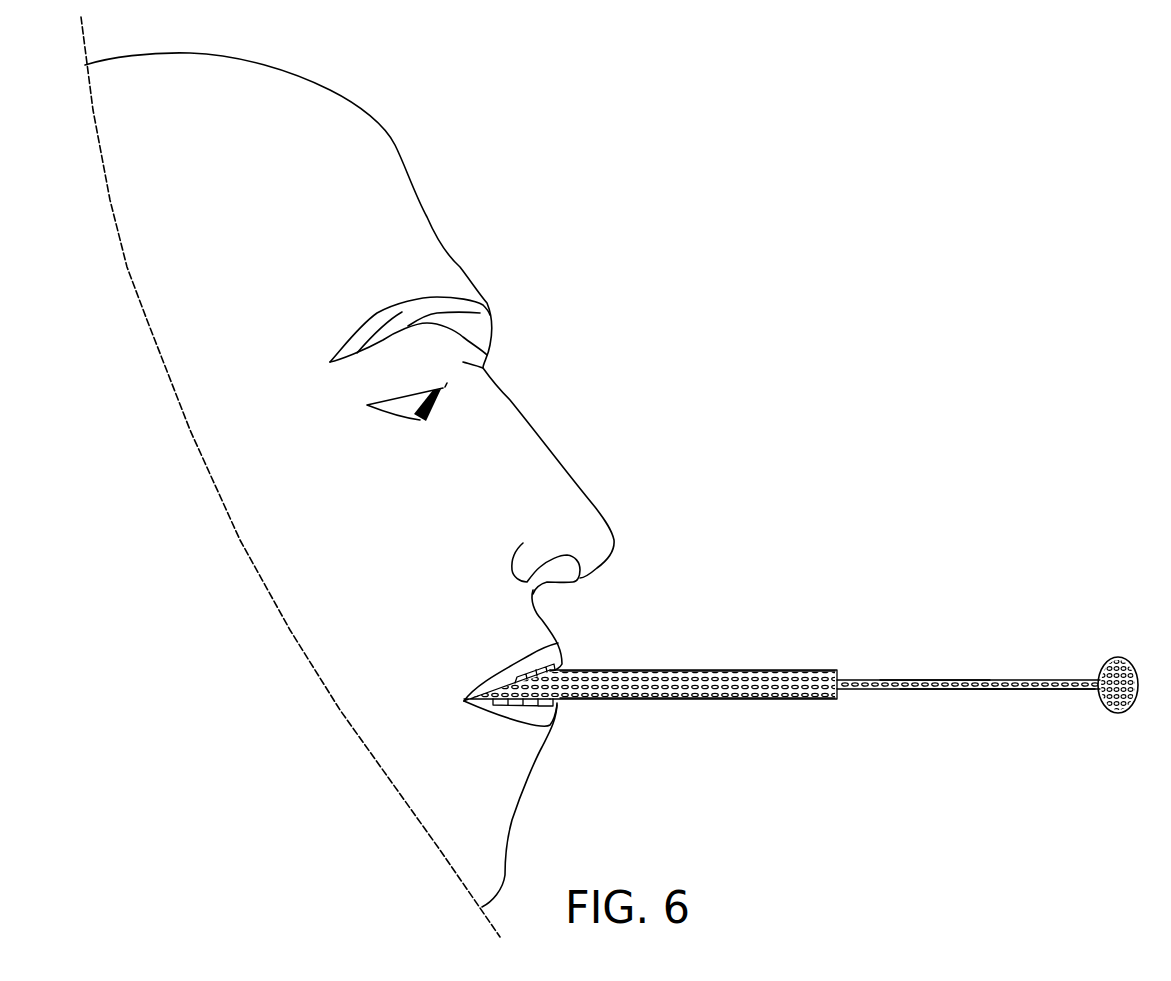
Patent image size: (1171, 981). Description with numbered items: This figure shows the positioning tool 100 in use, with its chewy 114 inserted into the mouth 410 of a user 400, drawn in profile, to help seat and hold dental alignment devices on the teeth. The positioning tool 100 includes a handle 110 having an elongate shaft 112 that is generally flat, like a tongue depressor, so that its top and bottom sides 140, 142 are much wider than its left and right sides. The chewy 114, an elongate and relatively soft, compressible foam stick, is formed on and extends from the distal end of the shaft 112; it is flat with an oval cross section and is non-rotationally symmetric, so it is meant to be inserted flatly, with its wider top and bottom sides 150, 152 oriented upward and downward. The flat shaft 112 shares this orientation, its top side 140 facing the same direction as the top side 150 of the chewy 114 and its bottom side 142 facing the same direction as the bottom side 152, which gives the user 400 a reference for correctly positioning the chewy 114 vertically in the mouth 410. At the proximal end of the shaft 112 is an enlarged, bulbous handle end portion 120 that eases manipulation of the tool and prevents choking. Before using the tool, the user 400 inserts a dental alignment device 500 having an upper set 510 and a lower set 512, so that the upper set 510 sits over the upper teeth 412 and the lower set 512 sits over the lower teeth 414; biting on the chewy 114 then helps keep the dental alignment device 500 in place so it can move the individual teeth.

The positioning tool 100 is at (887, 575).
The handle 110 is at (1002, 665).
The elongate shaft 112 is at (1023, 689).
The chewy 114 is at (683, 663).
The handle end portion 120 is at (1133, 657).
The top side of the shaft 140 is at (935, 680).
The bottom side of the shaft 142 is at (952, 689).
The top side of the chewy 150 is at (758, 670).
The bottom side of the chewy 152 is at (745, 699).
The user 400 is at (442, 132).
The mouth 410 is at (607, 593).
The upper teeth 412 is at (520, 680).
The lower teeth 414 is at (508, 708).
The dental alignment device 500 is at (560, 743).
The upper set 510 is at (557, 667).
The lower set 512 is at (553, 701).